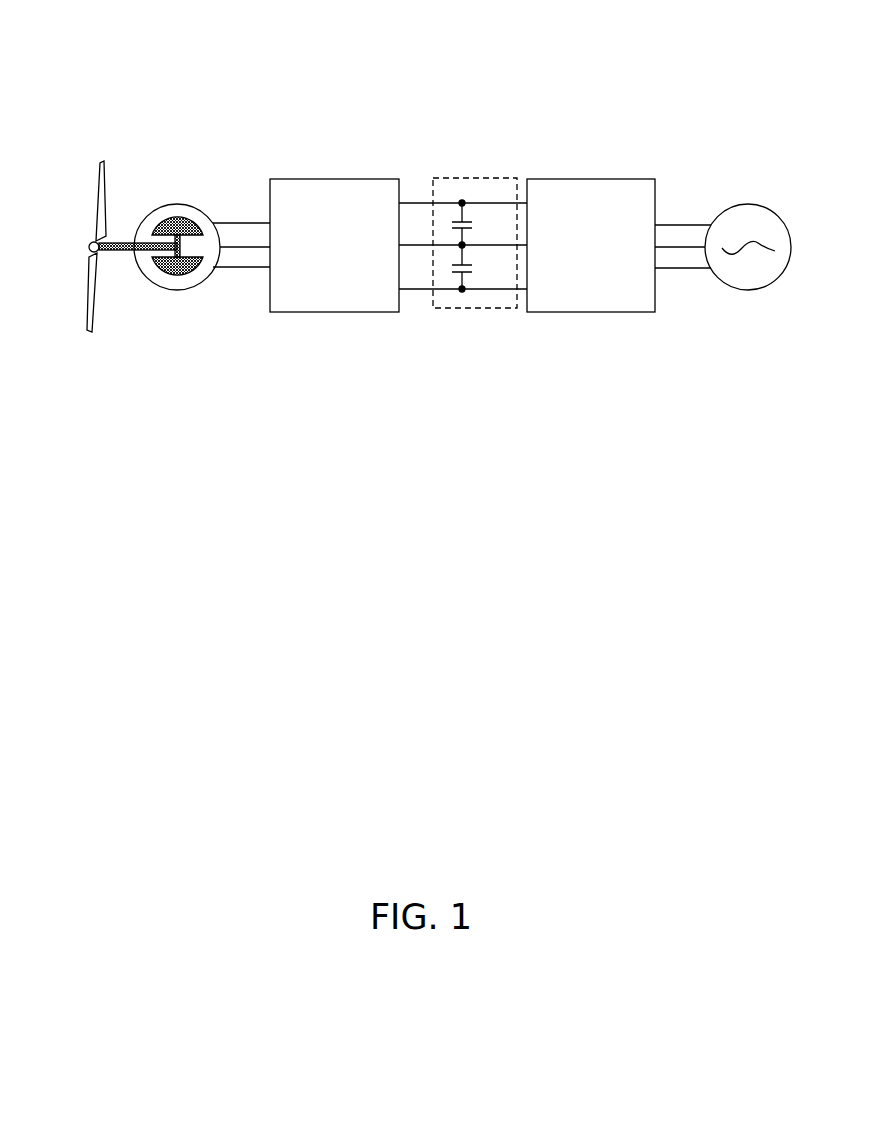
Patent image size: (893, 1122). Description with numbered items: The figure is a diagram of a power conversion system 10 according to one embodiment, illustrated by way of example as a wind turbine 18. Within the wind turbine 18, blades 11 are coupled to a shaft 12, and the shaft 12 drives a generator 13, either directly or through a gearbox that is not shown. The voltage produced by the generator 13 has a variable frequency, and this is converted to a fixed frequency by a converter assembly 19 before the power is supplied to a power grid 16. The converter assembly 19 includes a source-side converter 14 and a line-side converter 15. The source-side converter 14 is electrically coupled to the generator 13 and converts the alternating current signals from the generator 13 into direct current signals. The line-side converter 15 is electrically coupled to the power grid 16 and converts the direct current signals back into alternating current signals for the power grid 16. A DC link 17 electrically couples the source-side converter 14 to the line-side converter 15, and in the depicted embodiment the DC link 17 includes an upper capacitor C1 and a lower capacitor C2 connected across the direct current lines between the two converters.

The power conversion system 10 is at (703, 72).
The blades 11 is at (101, 195).
The shaft 12 is at (120, 242).
The generator 13 is at (175, 207).
The source-side converter 14 is at (322, 185).
The line-side converter 15 is at (585, 185).
The power grid 16 is at (780, 216).
The DC link 17 is at (452, 300).
The wind turbine 18 is at (72, 140).
The converter assembly 19 is at (613, 113).
The upper capacitor C1 is at (481, 224).
The lower capacitor C2 is at (481, 267).